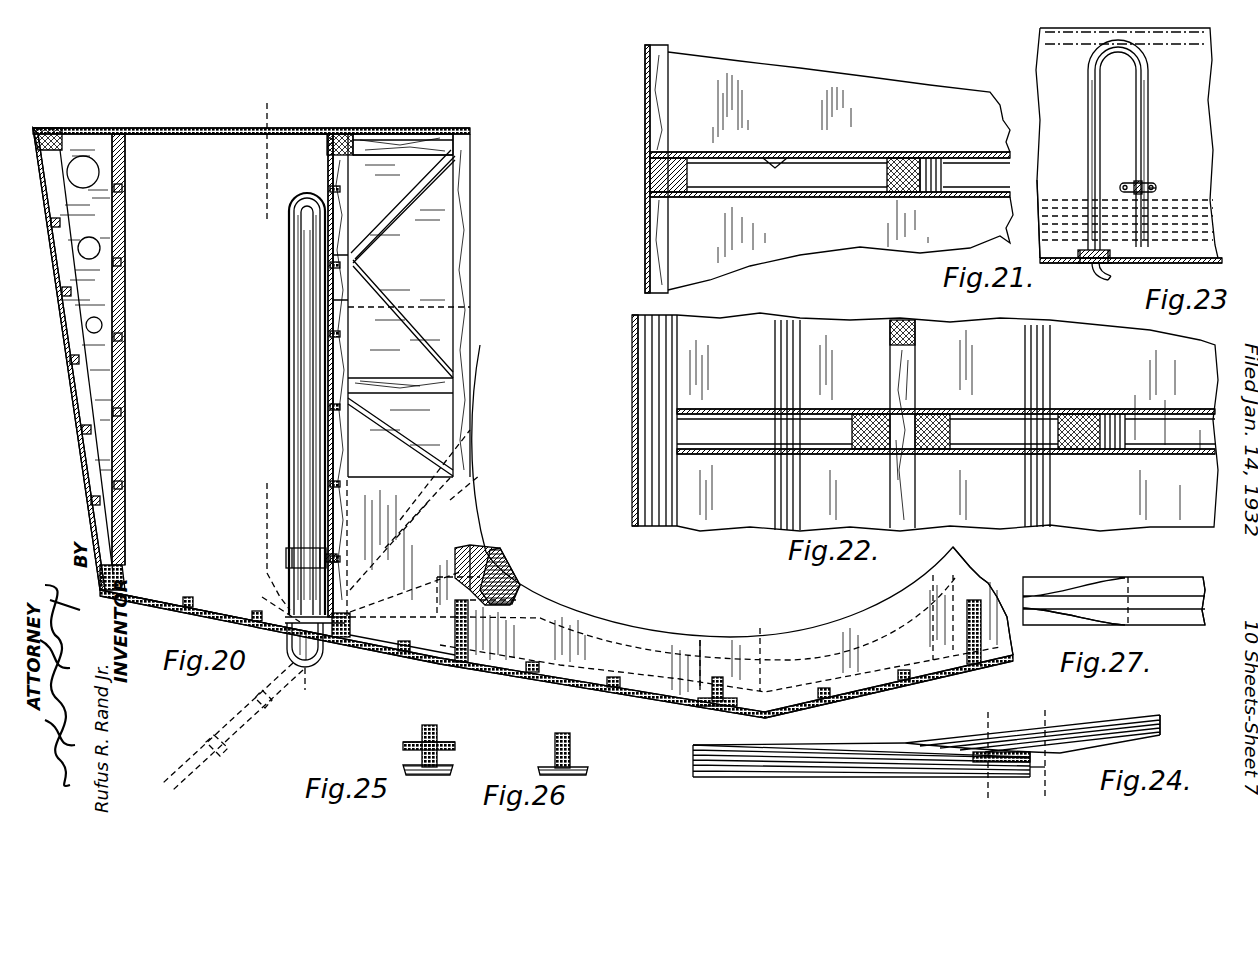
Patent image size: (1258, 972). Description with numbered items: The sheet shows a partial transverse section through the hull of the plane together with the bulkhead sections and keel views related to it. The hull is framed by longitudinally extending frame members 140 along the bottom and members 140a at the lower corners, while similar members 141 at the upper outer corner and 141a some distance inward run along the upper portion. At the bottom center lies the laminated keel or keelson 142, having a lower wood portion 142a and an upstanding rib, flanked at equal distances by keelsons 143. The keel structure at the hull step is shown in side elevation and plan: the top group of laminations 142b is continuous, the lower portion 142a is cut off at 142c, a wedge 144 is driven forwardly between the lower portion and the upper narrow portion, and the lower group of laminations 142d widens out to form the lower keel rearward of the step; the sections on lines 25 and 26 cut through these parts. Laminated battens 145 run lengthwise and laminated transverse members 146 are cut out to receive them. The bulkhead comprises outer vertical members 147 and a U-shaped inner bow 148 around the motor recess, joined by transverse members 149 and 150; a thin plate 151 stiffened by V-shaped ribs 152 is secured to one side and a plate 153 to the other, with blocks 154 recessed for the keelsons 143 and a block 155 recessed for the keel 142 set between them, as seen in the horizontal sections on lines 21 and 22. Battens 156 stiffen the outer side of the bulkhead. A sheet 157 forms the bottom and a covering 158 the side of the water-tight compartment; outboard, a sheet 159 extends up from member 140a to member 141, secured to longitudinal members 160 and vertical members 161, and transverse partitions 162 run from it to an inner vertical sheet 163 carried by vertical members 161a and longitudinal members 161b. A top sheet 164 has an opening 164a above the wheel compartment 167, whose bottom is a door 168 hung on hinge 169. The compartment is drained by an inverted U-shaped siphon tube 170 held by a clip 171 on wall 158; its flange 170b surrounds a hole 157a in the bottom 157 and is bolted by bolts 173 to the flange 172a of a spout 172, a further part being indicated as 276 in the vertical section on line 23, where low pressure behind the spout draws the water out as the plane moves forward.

In FIG. 20, the line 21— 21 is at (303, 315).
In FIG. 20, the line 22— 22 is at (661, 621).
In FIG. 20, the line 23— 23 is at (278, 106).
In FIG. 24, the line 25— 25 is at (1036, 803).
In FIG. 24, the line 26— 26 is at (974, 803).
In FIG. 20, the longitudinally extending frame member 140 is at (362, 641).
In FIG. 22, the longitudinally extending frame member 140 is at (671, 334).
In FIG. 20, the lower corner frame member 140a is at (104, 572).
In FIG. 20, the upper outer corner member 141 is at (70, 124).
In FIG. 20, the upper inner longitudinal member 141a is at (385, 123).
In FIG. 20, the central keel member 142 is at (736, 690).
In FIG. 27, the central keel member 142 is at (1140, 580).
In FIG. 24, the central keel member 142 is at (906, 748).
In FIG. 25, the central keel member 142 is at (555, 735).
In FIG. 26, the central keel member 142 is at (540, 729).
In FIG. 27, the lower wood portion of keel 142a is at (1036, 622).
In FIG. 24, the lower wood portion of keel 142a is at (791, 776).
In FIG. 25, the lower wood portion of keel 142a is at (455, 771).
In FIG. 26, the lower wood portion of keel 142a is at (538, 771).
In FIG. 24, the top group of laminations 142b is at (1060, 750).
In FIG. 24, the cut-off of lower keel portion 142c is at (1034, 780).
In FIG. 27, the lower group of laminations 142d is at (1206, 611).
In FIG. 24, the lower group of laminations 142d is at (1161, 727).
In FIG. 25, the lower group of laminations 142d is at (456, 748).
In FIG. 20, the keelson 143 is at (453, 652).
In FIG. 22, the keelson 143 is at (893, 387).
In FIG. 24, the wedge 144 is at (1035, 759).
In FIG. 25, the wedge 144 is at (403, 748).
In FIG. 20, the longitudinal batten 145 is at (596, 684).
In FIG. 22, the longitudinal batten 145 is at (1050, 382).
In FIG. 20, the transverse member 146 is at (144, 594).
In FIG. 20, the outer vertical member 147 is at (344, 286).
In FIG. 21, the outer vertical member 147 is at (681, 194).
In FIG. 20, the bow 148 is at (470, 248).
In FIG. 21, the bow 148 is at (900, 191).
In FIG. 22, the bow 148 is at (1078, 454).
In FIG. 20, the transverse member 149 is at (440, 140).
In FIG. 20, the transverse member 150 is at (448, 527).
In FIG. 20, the plate 151 is at (437, 213).
In FIG. 21, the plate 151 is at (750, 157).
In FIG. 22, the plate 151 is at (705, 414).
In FIG. 20, the V-shaped rib 152 is at (441, 173).
In FIG. 21, the V-shaped rib 152 is at (787, 173).
In FIG. 20, the plate 153 is at (450, 500).
In FIG. 21, the plate 153 is at (760, 198).
In FIG. 22, the plate 153 is at (697, 454).
In FIG. 20, the block 154 is at (458, 560).
In FIG. 22, the block 154 is at (950, 437).
In FIG. 20, the block 155 is at (697, 664).
In FIG. 20, the stiffening batten 156 is at (340, 338).
In FIG. 20, the bottom sheet 157 is at (500, 670).
In FIG. 23, the bottom sheet 157 is at (1180, 264).
In FIG. 23, the hole 157a is at (1080, 253).
In FIG. 20, the side covering 158 is at (328, 167).
In FIG. 20, the outer sheet 159 is at (73, 411).
In FIG. 20, the longitudinal member 160 is at (88, 291).
In FIG. 20, the vertical member 161 is at (80, 379).
In FIG. 20, the vertical member 161a is at (104, 231).
In FIG. 20, the longitudinal member 161b is at (103, 274).
In FIG. 20, the transverse partition 162 is at (114, 176).
In FIG. 20, the inner sheet 163 is at (119, 288).
In FIG. 20, the top rail 164 is at (163, 124).
In FIG. 20, the opening 164a is at (222, 129).
In FIG. 20, the wheel compartment 167 is at (205, 411).
In FIG. 20, the door 168 is at (148, 600).
In FIG. 20, the hinge 169 is at (327, 646).
In FIG. 20, the siphon tube 170 is at (297, 352).
In FIG. 23, the siphon tube 170 is at (1143, 66).
In FIG. 23, the flange 170b is at (1050, 255).
In FIG. 23, the clip 171 is at (1150, 184).
In FIG. 20, the spout member 172 is at (332, 626).
In FIG. 23, the spout member 172 is at (1093, 273).
In FIG. 23, the spout flange 172a is at (1108, 268).
In FIG. 23, the bolt 173 is at (1082, 270).
In FIG. 23, the indicated element 276 is at (1160, 197).